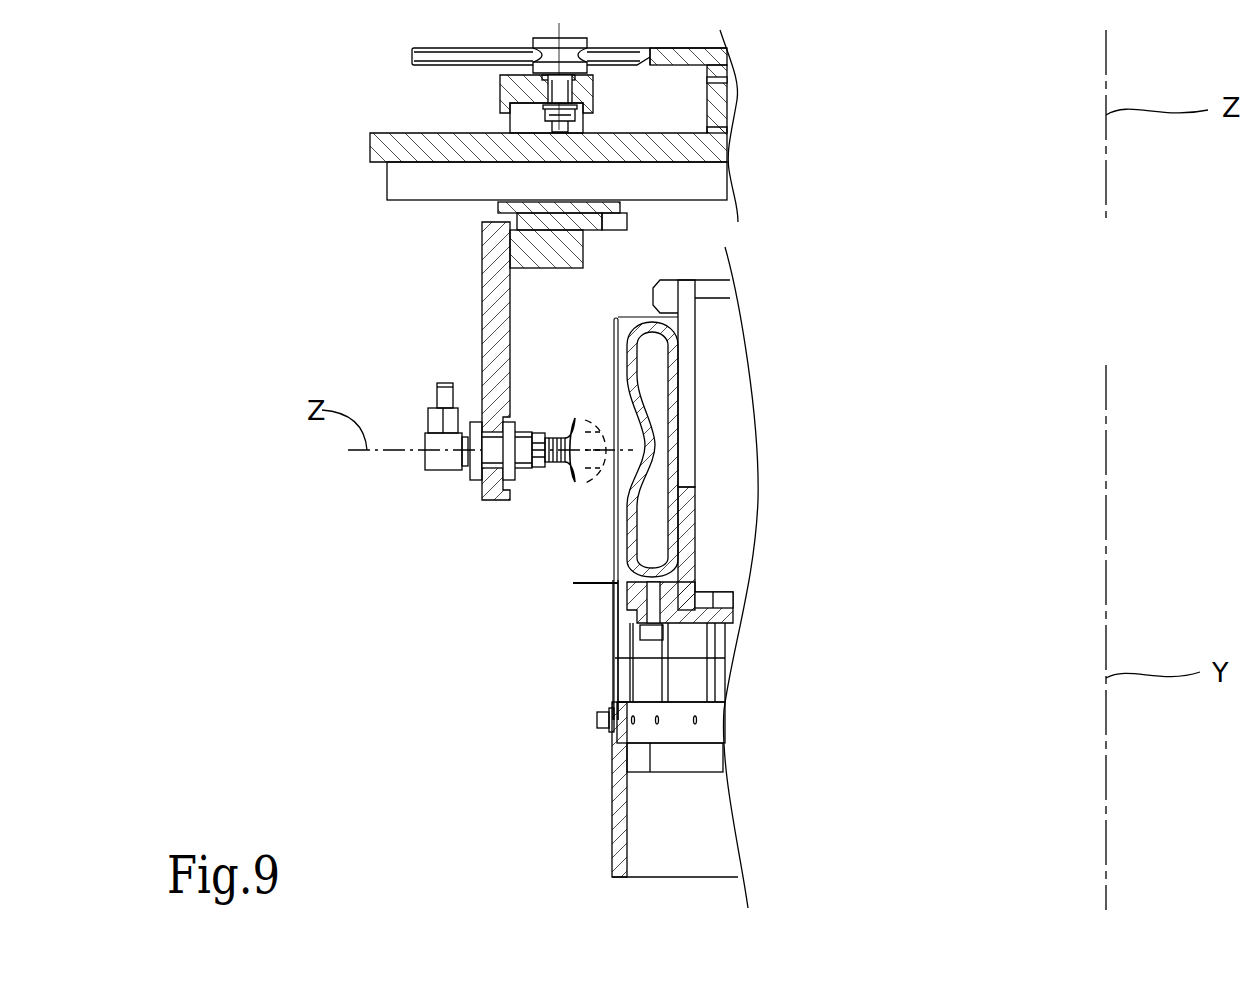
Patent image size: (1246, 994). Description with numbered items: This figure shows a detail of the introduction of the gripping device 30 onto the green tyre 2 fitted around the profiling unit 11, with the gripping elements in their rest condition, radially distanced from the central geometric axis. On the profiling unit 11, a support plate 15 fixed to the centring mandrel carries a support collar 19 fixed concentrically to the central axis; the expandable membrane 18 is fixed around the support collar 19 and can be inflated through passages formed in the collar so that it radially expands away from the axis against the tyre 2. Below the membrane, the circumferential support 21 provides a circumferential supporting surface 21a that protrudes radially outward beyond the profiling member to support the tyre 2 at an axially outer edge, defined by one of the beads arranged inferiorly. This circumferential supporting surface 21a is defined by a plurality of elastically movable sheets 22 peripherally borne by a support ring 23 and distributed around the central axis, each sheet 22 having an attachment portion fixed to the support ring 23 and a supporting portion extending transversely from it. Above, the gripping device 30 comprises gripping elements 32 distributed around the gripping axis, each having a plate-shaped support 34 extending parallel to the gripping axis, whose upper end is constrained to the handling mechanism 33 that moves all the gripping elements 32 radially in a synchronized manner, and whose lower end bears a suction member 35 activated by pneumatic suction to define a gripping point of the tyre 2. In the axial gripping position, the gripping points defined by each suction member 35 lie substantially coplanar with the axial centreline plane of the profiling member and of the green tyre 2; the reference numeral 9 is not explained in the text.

The gripping device 30 is at (768, 127).
The profiling unit 11 is at (790, 238).
The handling mechanism 33 is at (488, 209).
The support 34 is at (493, 318).
The gripping element 32 is at (475, 498).
The suction member 35 is at (607, 430).
The green tyre 2 is at (622, 478).
The expandable membrane 18 is at (640, 427).
The support collar 19 is at (695, 347).
The support plate 15 is at (725, 598).
The circumferential supporting surface 21a is at (590, 583).
The elastically movable sheet 22 is at (617, 628).
The circumferential support 21 is at (613, 765).
The gripping device 9 is at (436, 628).
The support ring 23 is at (620, 857).